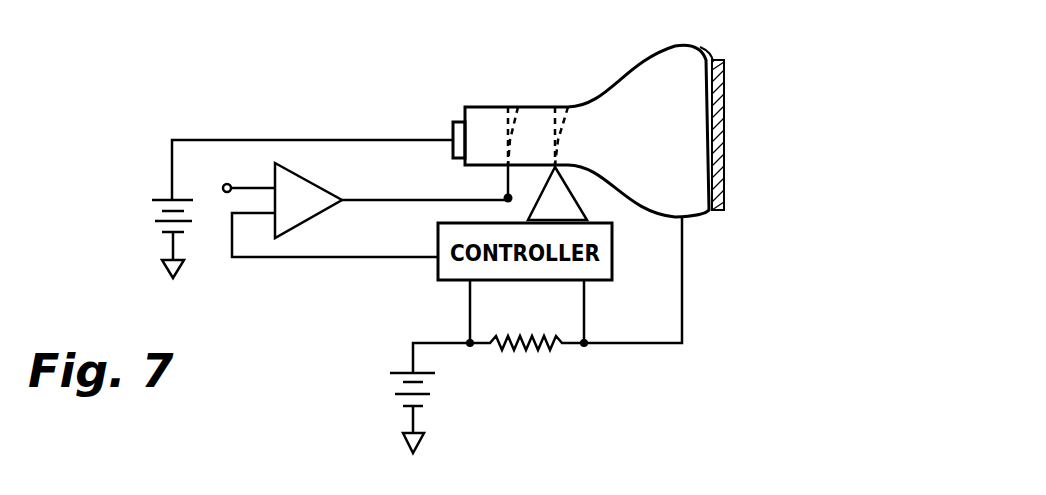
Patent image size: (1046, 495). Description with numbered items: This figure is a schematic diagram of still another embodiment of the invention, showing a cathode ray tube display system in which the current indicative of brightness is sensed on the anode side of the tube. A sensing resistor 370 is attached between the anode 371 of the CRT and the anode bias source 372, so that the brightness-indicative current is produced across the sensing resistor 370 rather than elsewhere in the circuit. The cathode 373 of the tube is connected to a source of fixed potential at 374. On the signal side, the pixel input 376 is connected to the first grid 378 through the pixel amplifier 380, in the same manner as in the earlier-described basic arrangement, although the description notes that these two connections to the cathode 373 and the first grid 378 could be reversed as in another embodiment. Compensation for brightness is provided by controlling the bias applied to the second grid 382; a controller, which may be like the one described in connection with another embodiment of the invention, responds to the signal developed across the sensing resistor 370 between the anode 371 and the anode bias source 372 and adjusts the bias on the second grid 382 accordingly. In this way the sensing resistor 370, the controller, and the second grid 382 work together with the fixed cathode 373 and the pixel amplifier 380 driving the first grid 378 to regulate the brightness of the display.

The sensing resistor 370 is at (530, 352).
The anode 371 is at (682, 270).
The anode bias source 372 is at (398, 371).
The cathode 373 is at (453, 133).
The source of fixed potential 374 is at (167, 199).
The pixel input 376 is at (233, 186).
The first grid 378 is at (519, 104).
The pixel amplifier 380 is at (331, 192).
The second grid 382 is at (569, 104).